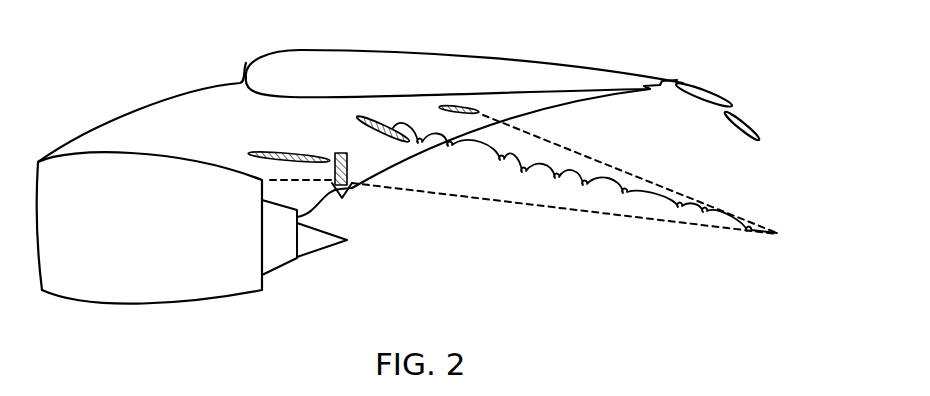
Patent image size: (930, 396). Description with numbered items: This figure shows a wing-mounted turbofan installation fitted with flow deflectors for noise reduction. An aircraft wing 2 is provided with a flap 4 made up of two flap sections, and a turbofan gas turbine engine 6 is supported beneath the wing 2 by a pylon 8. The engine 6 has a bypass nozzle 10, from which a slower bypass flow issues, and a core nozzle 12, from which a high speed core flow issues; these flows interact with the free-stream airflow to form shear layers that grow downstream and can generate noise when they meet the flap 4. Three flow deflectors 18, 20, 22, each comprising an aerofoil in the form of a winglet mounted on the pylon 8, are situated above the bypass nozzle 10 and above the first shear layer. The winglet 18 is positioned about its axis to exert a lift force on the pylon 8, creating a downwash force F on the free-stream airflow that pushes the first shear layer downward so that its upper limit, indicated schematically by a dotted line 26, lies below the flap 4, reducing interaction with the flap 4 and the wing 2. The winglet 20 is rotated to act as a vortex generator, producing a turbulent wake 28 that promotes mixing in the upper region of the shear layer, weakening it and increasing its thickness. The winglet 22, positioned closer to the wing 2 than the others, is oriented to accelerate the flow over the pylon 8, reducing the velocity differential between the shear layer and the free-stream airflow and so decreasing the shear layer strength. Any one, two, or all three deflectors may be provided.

The aircraft wing 2 is at (566, 61).
The flap 4 is at (728, 86).
The turbofan gas turbine engine 6 is at (127, 306).
The pylon 8 is at (182, 94).
The bypass nozzle 10 is at (263, 288).
The core nozzle 12 is at (298, 262).
The flow deflector 18 is at (262, 152).
The flow deflector 20 is at (370, 116).
The flow deflector 22 is at (459, 106).
The dotted line 26 is at (477, 197).
The turbulent wake 28 is at (600, 181).
The downwash force F is at (343, 191).